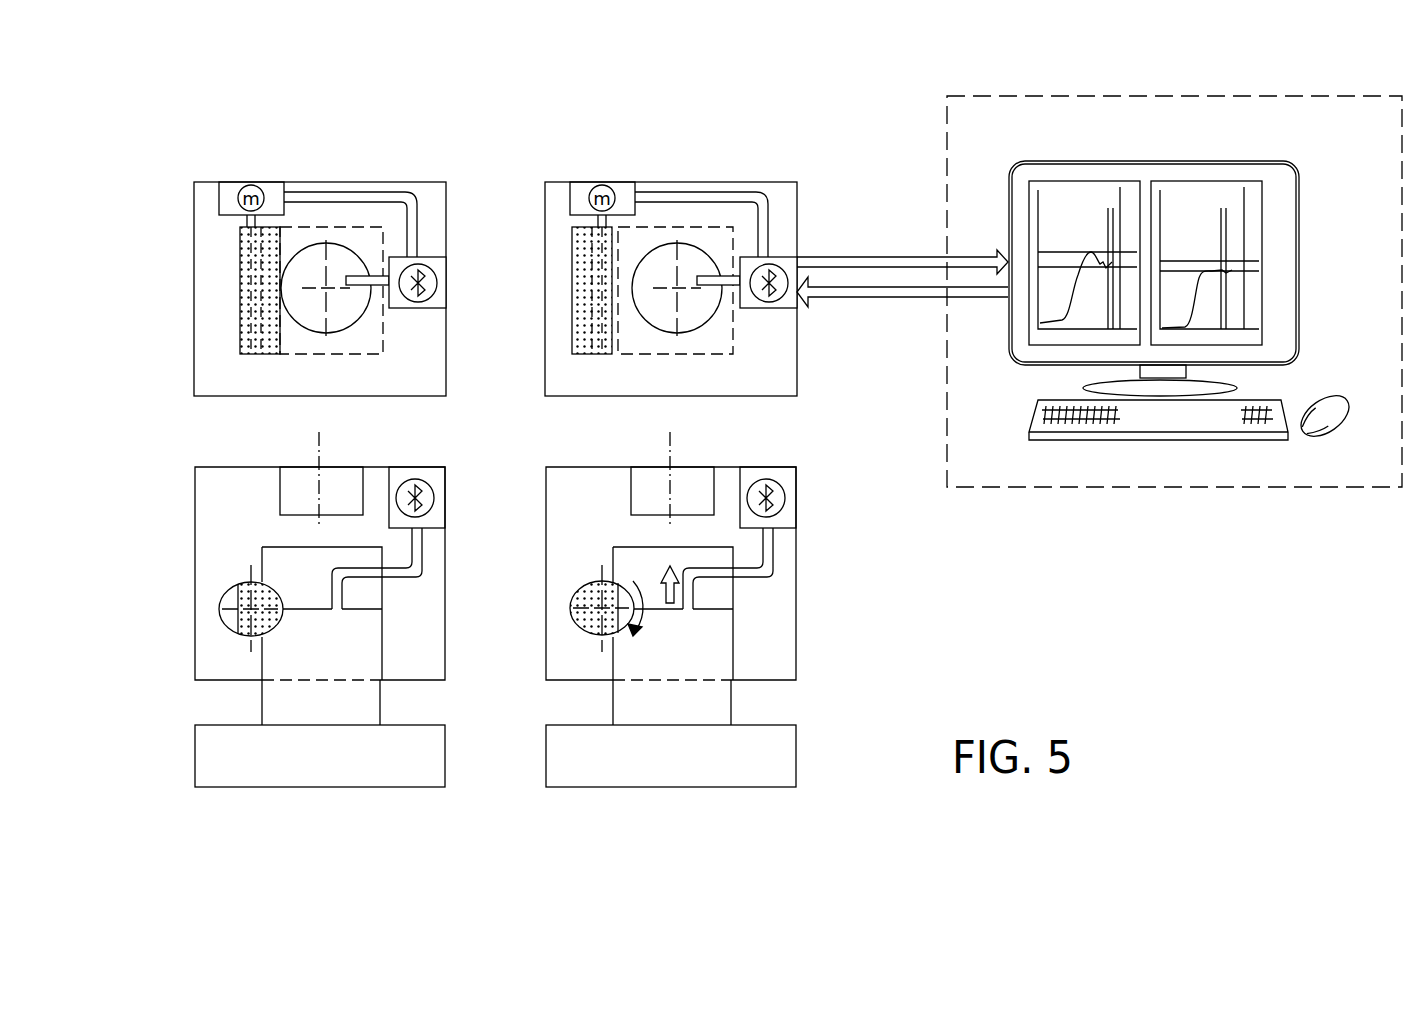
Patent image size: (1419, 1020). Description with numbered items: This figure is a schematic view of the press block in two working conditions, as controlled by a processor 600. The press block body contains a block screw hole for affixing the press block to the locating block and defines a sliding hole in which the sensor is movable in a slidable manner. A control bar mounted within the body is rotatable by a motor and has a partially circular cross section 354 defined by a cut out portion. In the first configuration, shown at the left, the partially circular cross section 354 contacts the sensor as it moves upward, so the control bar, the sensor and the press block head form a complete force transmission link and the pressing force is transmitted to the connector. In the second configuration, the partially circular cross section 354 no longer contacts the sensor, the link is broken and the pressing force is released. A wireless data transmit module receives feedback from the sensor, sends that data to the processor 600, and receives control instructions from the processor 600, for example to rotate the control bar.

The partially circular cross section 354 is at (247, 583).
The processor 600 is at (1172, 160).